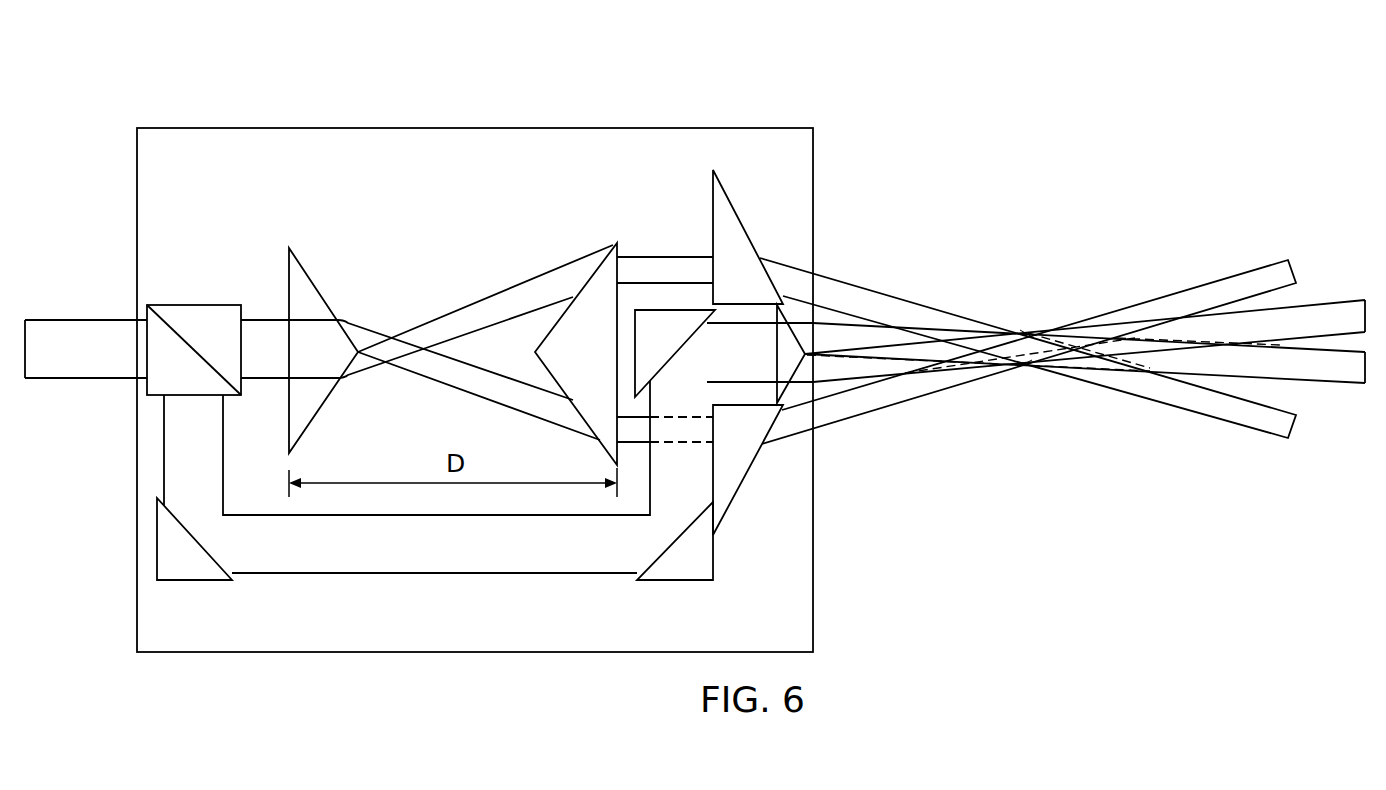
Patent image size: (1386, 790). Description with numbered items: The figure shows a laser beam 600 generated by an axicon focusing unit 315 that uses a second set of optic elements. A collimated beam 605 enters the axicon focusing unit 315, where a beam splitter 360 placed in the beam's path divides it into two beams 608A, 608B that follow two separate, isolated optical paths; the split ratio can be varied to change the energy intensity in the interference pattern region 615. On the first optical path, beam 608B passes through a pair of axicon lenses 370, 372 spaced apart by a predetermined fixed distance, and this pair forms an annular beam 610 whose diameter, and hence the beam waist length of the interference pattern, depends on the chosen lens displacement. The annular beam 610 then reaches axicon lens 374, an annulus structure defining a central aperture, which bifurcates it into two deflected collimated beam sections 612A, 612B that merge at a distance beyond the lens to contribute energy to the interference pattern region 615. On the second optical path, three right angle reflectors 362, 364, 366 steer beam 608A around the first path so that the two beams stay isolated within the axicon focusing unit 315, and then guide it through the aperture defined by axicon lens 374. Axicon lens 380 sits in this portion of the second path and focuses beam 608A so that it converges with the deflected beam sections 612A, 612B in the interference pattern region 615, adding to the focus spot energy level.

The laser beam 600 is at (683, 78).
The axicon focusing unit 315 is at (458, 128).
The collimated beam 605 is at (73, 320).
The beam 608A is at (164, 449).
The beam 608B is at (262, 320).
The beam splitter 360 is at (197, 388).
The right angle reflector 362 is at (202, 577).
The right angle reflector 364 is at (708, 574).
The right angle reflector 366 is at (682, 340).
The axicon lens 370 is at (312, 420).
The axicon lens 372 is at (612, 246).
The axicon lens 374 is at (728, 184).
The axicon lens 380 is at (800, 337).
The annular beam 610 is at (657, 257).
The deflected collimated beam section 612A is at (885, 410).
The deflected collimated beam section 612B is at (772, 258).
The interference pattern region 615 is at (1027, 332).